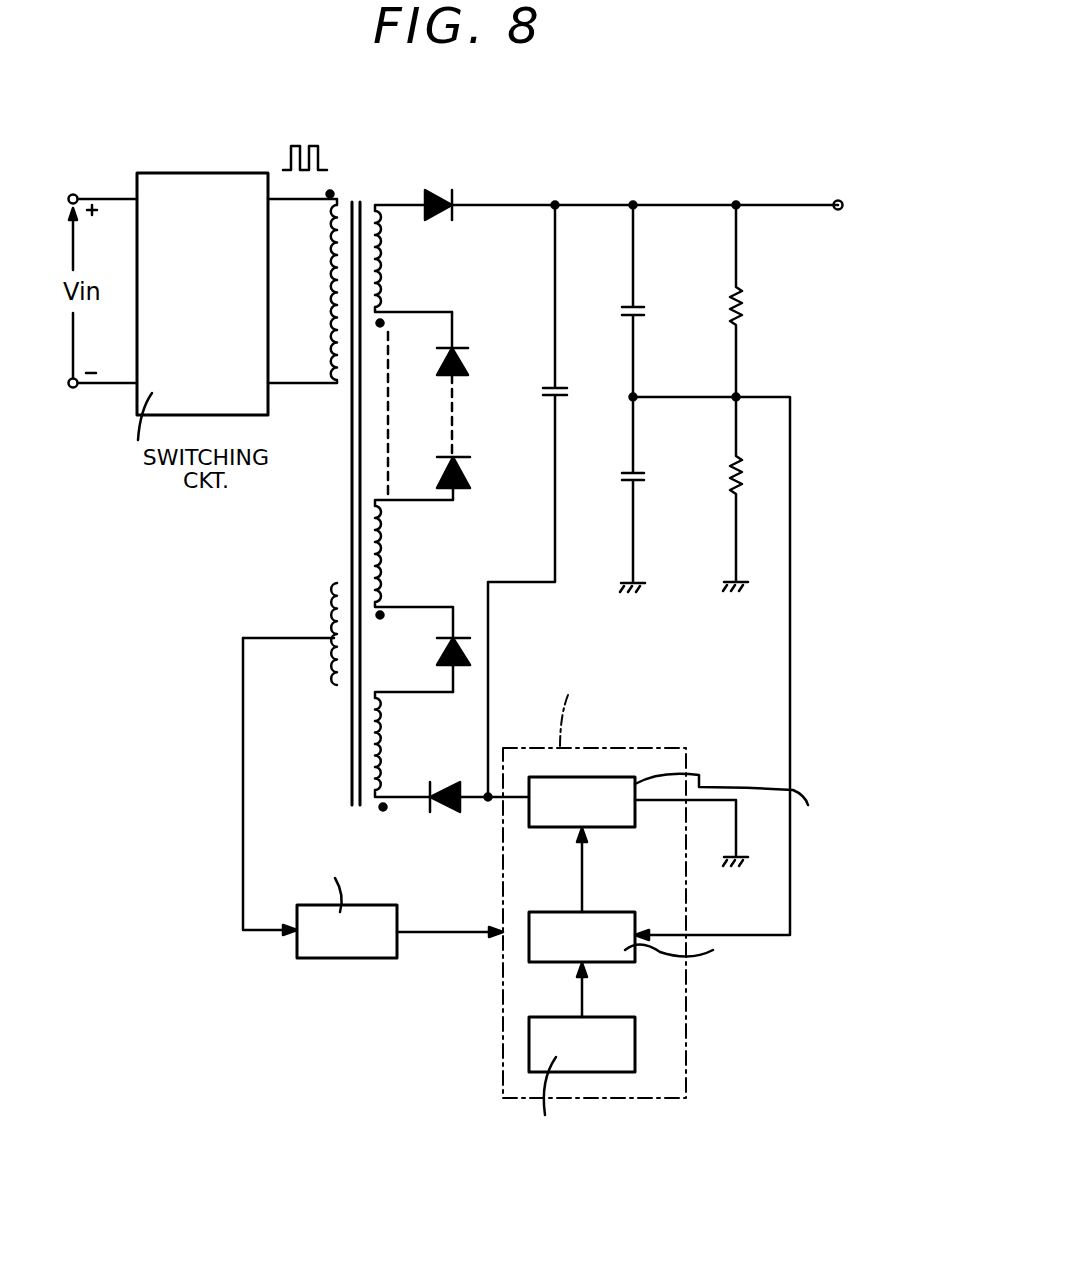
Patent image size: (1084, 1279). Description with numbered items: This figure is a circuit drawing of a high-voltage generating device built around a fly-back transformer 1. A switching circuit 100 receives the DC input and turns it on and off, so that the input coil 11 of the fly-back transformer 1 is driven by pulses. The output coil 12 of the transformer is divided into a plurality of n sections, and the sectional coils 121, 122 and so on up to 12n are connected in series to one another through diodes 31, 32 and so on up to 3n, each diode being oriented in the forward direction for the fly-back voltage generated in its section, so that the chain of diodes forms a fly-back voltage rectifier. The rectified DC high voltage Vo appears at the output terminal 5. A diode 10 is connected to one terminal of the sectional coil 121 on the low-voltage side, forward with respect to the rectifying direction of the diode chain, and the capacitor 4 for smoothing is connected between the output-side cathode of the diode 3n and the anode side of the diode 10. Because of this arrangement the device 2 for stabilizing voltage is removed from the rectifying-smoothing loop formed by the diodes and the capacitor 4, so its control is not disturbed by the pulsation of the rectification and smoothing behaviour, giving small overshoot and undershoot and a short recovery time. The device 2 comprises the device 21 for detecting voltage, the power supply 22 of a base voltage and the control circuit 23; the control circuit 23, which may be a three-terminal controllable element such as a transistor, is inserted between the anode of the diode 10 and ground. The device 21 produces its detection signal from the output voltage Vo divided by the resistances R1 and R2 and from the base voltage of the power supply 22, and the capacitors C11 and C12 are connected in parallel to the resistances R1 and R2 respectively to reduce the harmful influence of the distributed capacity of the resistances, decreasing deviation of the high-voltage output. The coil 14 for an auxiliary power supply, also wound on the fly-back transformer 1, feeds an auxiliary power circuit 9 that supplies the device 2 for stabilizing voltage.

The switching circuit 100 is at (200, 170).
The fly-back transformer 1 is at (368, 171).
The input coil 11 is at (330, 283).
The sectional coil 12n is at (372, 266).
The diode 3n is at (432, 190).
The output coil 12 is at (463, 313).
The diode 32 is at (460, 482).
The sectional coil 122 is at (388, 546).
The diode 31 is at (437, 658).
The sectional coil 121 is at (390, 754).
The diode 10 is at (443, 817).
The coil for auxiliary power supply 14 is at (330, 625).
The capacitor for smoothing 4 is at (570, 402).
The output terminal 5 is at (838, 212).
The device for stabilizing voltage 2 is at (660, 748).
The control circuit 23 is at (610, 829).
The device for detecting voltage 21 is at (610, 957).
The power supply of base voltage 22 is at (637, 1030).
The auxiliary power circuit 9 is at (366, 960).
The capacitor C11 is at (658, 301).
The capacitor C12 is at (658, 494).
The resistance R1 is at (753, 301).
The resistance R2 is at (749, 494).